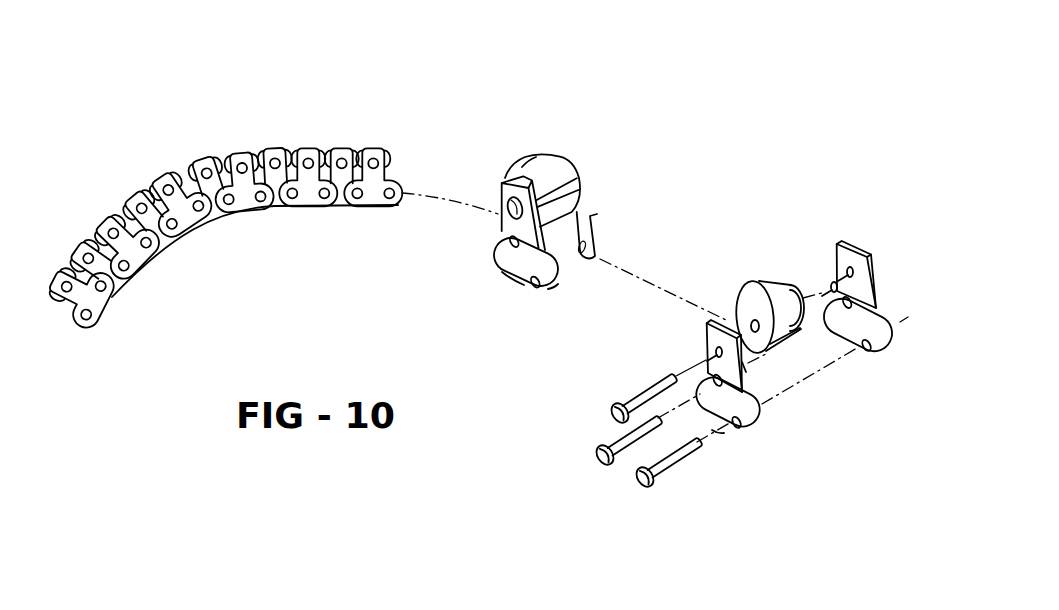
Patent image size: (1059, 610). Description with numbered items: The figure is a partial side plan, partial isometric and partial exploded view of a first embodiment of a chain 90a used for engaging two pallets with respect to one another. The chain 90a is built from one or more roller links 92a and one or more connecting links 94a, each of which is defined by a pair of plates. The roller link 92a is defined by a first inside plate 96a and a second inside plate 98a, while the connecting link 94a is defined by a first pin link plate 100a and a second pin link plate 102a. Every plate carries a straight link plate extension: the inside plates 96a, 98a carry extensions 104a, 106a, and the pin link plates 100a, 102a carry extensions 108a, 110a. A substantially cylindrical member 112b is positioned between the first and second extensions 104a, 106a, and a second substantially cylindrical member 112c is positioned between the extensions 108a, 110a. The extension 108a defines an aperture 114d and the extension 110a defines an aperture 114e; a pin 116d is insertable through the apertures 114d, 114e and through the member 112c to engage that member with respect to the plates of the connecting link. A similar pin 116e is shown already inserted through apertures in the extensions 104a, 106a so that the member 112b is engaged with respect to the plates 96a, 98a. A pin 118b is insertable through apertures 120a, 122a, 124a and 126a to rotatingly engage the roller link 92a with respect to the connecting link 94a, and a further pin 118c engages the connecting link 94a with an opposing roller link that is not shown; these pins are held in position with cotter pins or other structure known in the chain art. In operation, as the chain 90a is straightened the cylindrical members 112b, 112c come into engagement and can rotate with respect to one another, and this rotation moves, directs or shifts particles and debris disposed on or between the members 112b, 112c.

The chain 90a is at (334, 124).
The roller link 92a is at (608, 130).
The connecting link 94a is at (785, 149).
The first inside plate 96a is at (523, 287).
The second inside plate 98a is at (598, 222).
The first pin link plate 100a is at (752, 432).
The second pin link plate 102a is at (895, 343).
The extension 104a is at (490, 236).
The extension 106a is at (579, 180).
The extension 108a is at (746, 372).
The extension 110a is at (871, 256).
The member 112b is at (538, 154).
The member 112c is at (757, 289).
The aperture 114d is at (708, 358).
The aperture 114e is at (851, 270).
The pin 116d is at (612, 407).
The pin 116e is at (503, 200).
The pin 118b is at (602, 467).
The pin 118c is at (648, 490).
The aperture 120a is at (717, 438).
The aperture 122a is at (546, 296).
The aperture 124a is at (627, 273).
The aperture 126a is at (835, 285).